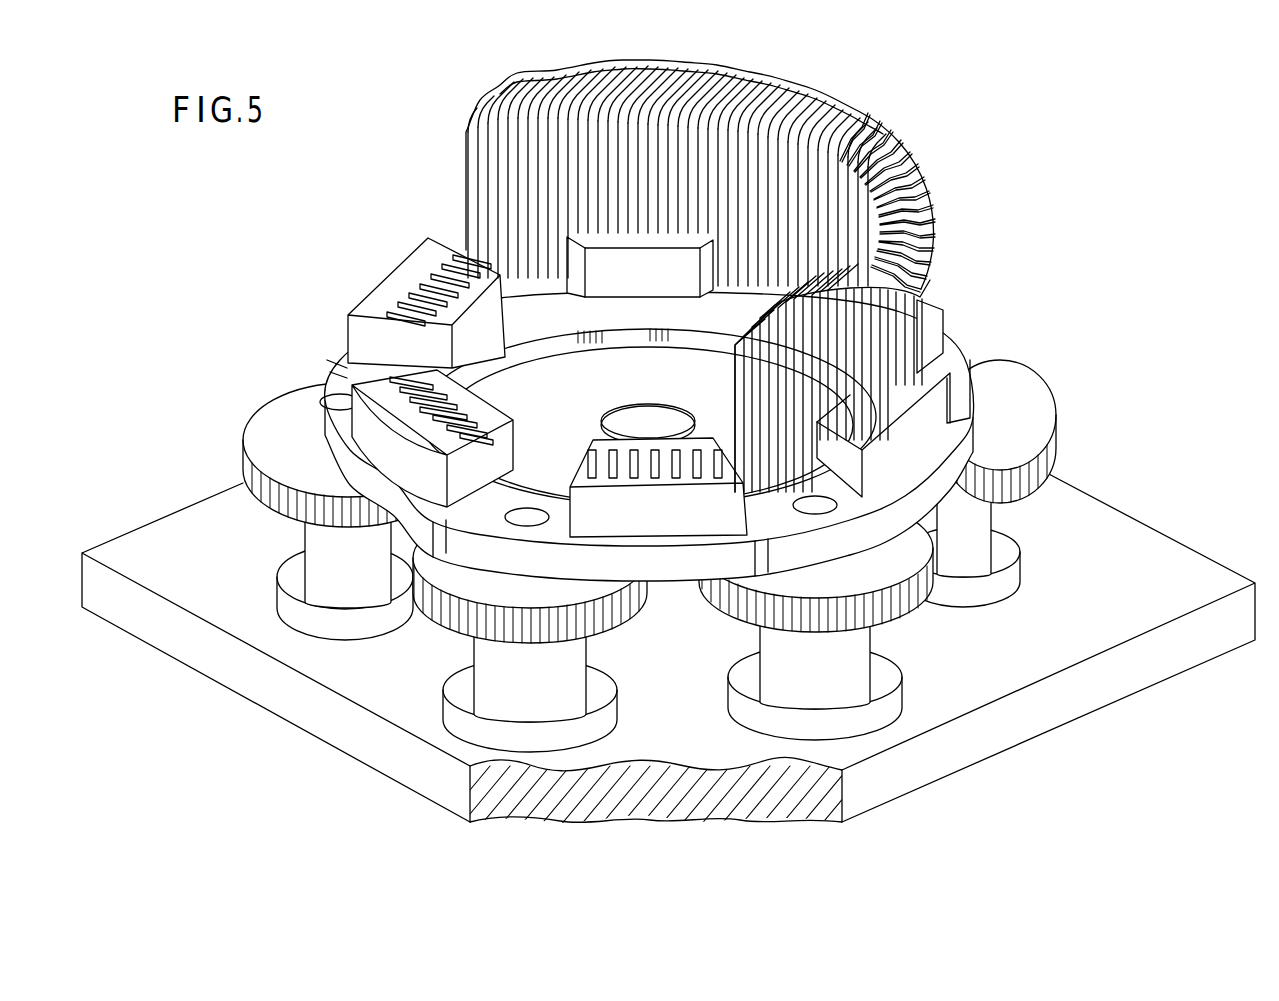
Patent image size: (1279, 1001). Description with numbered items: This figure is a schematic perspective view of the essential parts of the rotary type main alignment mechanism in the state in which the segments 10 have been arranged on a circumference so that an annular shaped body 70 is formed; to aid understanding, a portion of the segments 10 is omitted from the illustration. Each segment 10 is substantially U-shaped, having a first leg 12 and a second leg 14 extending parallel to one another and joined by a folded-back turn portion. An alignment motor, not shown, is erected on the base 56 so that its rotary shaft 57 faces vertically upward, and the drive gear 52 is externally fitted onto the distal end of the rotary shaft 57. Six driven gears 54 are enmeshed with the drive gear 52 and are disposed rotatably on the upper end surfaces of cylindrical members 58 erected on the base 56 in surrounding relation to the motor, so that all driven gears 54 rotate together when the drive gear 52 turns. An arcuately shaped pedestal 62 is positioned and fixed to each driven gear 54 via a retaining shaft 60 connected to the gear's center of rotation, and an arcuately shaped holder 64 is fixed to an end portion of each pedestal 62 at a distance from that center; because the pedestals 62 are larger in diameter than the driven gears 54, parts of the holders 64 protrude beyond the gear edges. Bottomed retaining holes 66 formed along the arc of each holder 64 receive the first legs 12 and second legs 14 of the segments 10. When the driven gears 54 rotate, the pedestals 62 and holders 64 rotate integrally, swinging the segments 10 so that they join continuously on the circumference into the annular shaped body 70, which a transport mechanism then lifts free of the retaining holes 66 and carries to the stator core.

The segment 10 is at (677, 275).
The first leg 12 is at (533, 171).
The second leg 14 is at (600, 128).
The drive gear 52 is at (628, 363).
The driven gear 54 is at (263, 427).
The base 56 is at (1173, 557).
The rotary shaft 57 is at (630, 420).
The cylindrical member 58 is at (388, 588).
The retaining shaft 60 is at (335, 400).
The pedestal 62 is at (340, 352).
The arcuately shaped holder 64 is at (637, 450).
The retaining hole 66 is at (410, 296).
The annular shaped body 70 is at (922, 140).